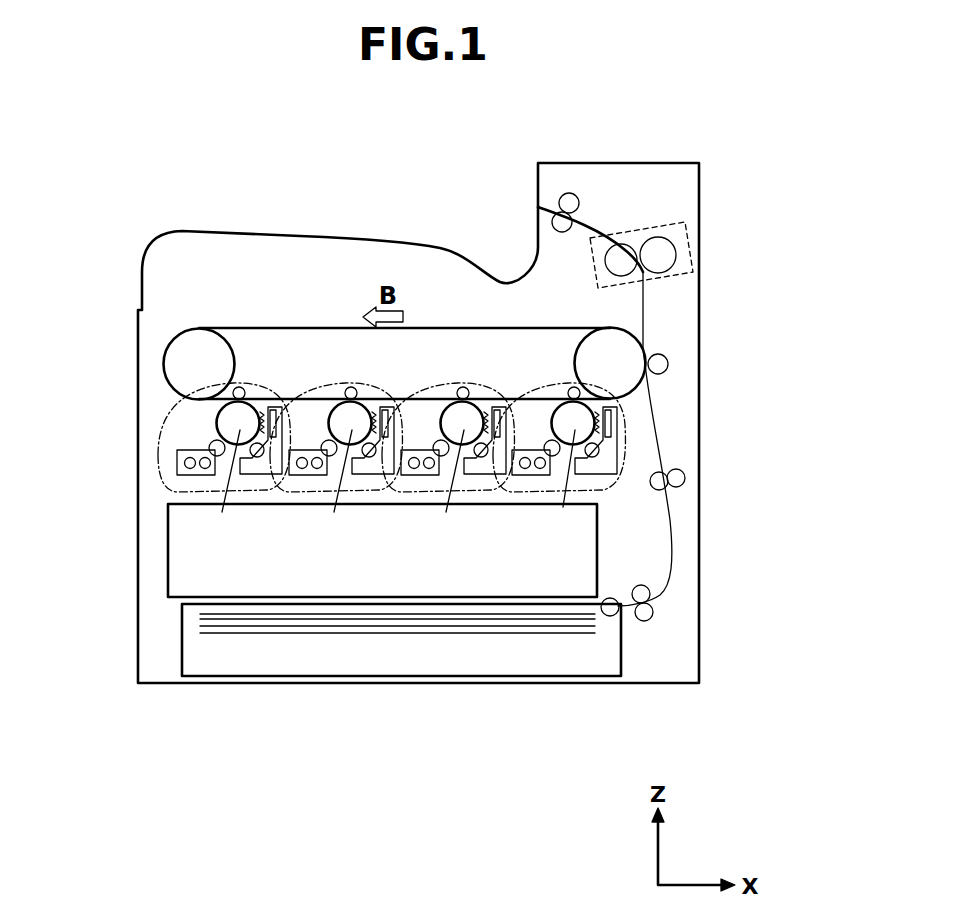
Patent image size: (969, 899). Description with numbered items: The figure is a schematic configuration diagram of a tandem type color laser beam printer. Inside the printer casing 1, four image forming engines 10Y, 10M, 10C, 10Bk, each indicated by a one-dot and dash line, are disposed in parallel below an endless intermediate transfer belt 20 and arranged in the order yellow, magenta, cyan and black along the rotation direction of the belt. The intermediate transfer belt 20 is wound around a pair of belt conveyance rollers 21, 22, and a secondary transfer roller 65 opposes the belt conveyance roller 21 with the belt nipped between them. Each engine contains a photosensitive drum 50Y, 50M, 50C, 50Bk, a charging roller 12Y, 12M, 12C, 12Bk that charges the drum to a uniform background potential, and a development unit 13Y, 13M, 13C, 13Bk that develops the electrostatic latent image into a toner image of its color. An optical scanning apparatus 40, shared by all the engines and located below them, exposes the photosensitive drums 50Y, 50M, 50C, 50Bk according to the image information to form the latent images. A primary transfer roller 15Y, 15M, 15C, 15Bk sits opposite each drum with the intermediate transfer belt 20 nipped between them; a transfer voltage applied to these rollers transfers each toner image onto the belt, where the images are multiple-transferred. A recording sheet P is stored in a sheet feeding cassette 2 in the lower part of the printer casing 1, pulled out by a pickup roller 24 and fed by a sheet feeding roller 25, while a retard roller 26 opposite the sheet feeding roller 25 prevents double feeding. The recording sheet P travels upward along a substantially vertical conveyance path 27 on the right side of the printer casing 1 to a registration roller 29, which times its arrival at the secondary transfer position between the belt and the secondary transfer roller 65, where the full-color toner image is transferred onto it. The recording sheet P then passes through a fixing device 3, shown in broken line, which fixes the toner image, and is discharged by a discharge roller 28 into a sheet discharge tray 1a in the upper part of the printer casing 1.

The printer casing 1 is at (150, 412).
The sheet discharge tray 1a is at (443, 248).
The sheet feeding cassette 2 is at (621, 660).
The fixing device 3 is at (685, 230).
The image forming engine for yellow 10Y is at (213, 487).
The image forming engine for magenta 10M is at (295, 490).
The image forming engine for cyan 10C is at (485, 493).
The image forming engine for black 10Bk is at (613, 496).
The charging roller 12Y is at (257, 457).
The charging roller 12M is at (369, 457).
The charging roller 12C is at (481, 457).
The charging roller 12Bk is at (600, 452).
The development unit 13Y is at (175, 463).
The development unit 13M is at (293, 450).
The development unit 13C is at (408, 450).
The development unit 13Bk is at (528, 452).
The primary transfer roller 15Y is at (243, 386).
The primary transfer roller 15M is at (352, 408).
The primary transfer roller 15C is at (462, 405).
The primary transfer roller 15Bk is at (573, 405).
The intermediate transfer belt 20 is at (280, 327).
The belt conveyance roller 21 is at (621, 347).
The belt conveyance roller 22 is at (192, 345).
The pickup roller 24 is at (610, 616).
The sheet feeding roller 25 is at (650, 594).
The retard roller 26 is at (653, 612).
The conveyance path 27 is at (643, 308).
The discharge roller 28 is at (569, 193).
The registration roller 29 is at (685, 478).
The optical scanning apparatus 40 is at (600, 547).
The photosensitive drum 50Y is at (230, 420).
The photosensitive drum 50M is at (352, 386).
The photosensitive drum 50C is at (461, 386).
The photosensitive drum 50Bk is at (587, 422).
The secondary transfer roller 65 is at (668, 364).
The recording sheet P is at (477, 633).